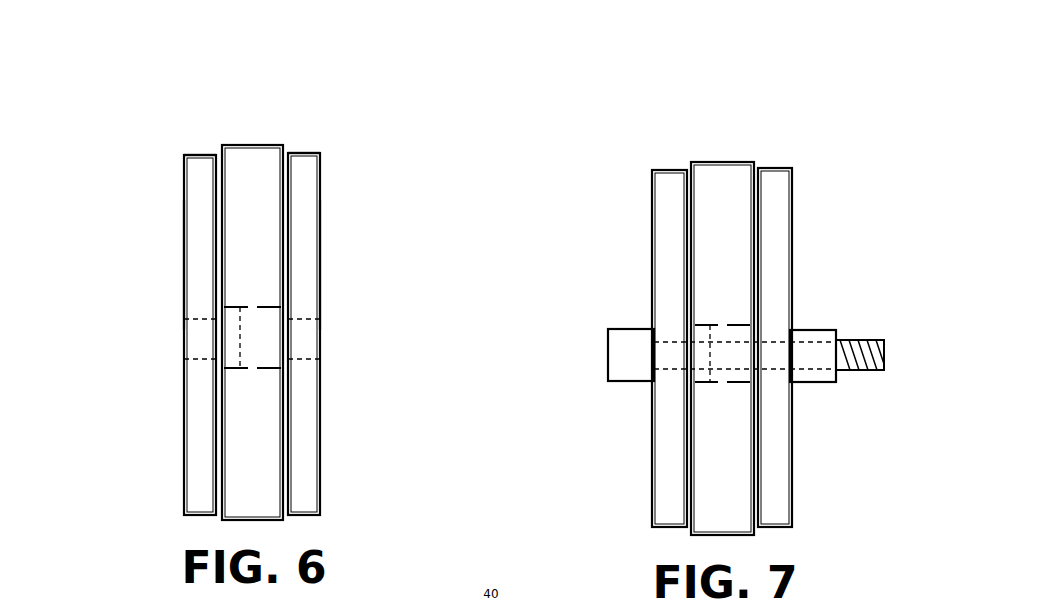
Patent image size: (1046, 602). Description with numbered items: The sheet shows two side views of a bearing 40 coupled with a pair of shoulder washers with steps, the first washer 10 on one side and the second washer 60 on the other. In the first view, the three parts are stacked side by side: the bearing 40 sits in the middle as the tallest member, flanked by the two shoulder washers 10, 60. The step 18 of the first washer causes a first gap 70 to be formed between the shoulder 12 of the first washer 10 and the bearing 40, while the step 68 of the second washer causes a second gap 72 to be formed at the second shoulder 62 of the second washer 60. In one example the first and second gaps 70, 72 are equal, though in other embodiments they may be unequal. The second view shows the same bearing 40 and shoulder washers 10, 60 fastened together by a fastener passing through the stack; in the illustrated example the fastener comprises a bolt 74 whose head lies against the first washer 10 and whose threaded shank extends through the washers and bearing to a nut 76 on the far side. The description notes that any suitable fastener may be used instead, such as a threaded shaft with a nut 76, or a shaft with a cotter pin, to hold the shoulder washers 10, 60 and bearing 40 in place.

In FIG. 6, the first shoulder washer 10 is at (175, 266).
In FIG. 7, the first shoulder washer 10 is at (646, 287).
In FIG. 6, the shoulder of the first washer 12 is at (156, 215).
In FIG. 6, the step 18 is at (220, 368).
In FIG. 6, the bearing 40 is at (242, 109).
In FIG. 7, the bearing 40 is at (714, 134).
In FIG. 6, the second shoulder washer 60 is at (328, 270).
In FIG. 7, the second shoulder washer 60 is at (799, 292).
In FIG. 6, the second shoulder 62 is at (347, 220).
In FIG. 6, the step 68 is at (284, 368).
In FIG. 6, the first gap 70 is at (210, 125).
In FIG. 6, the second gap 72 is at (294, 125).
In FIG. 7, the bolt 74 is at (608, 357).
In FIG. 7, the nut 76 is at (807, 383).